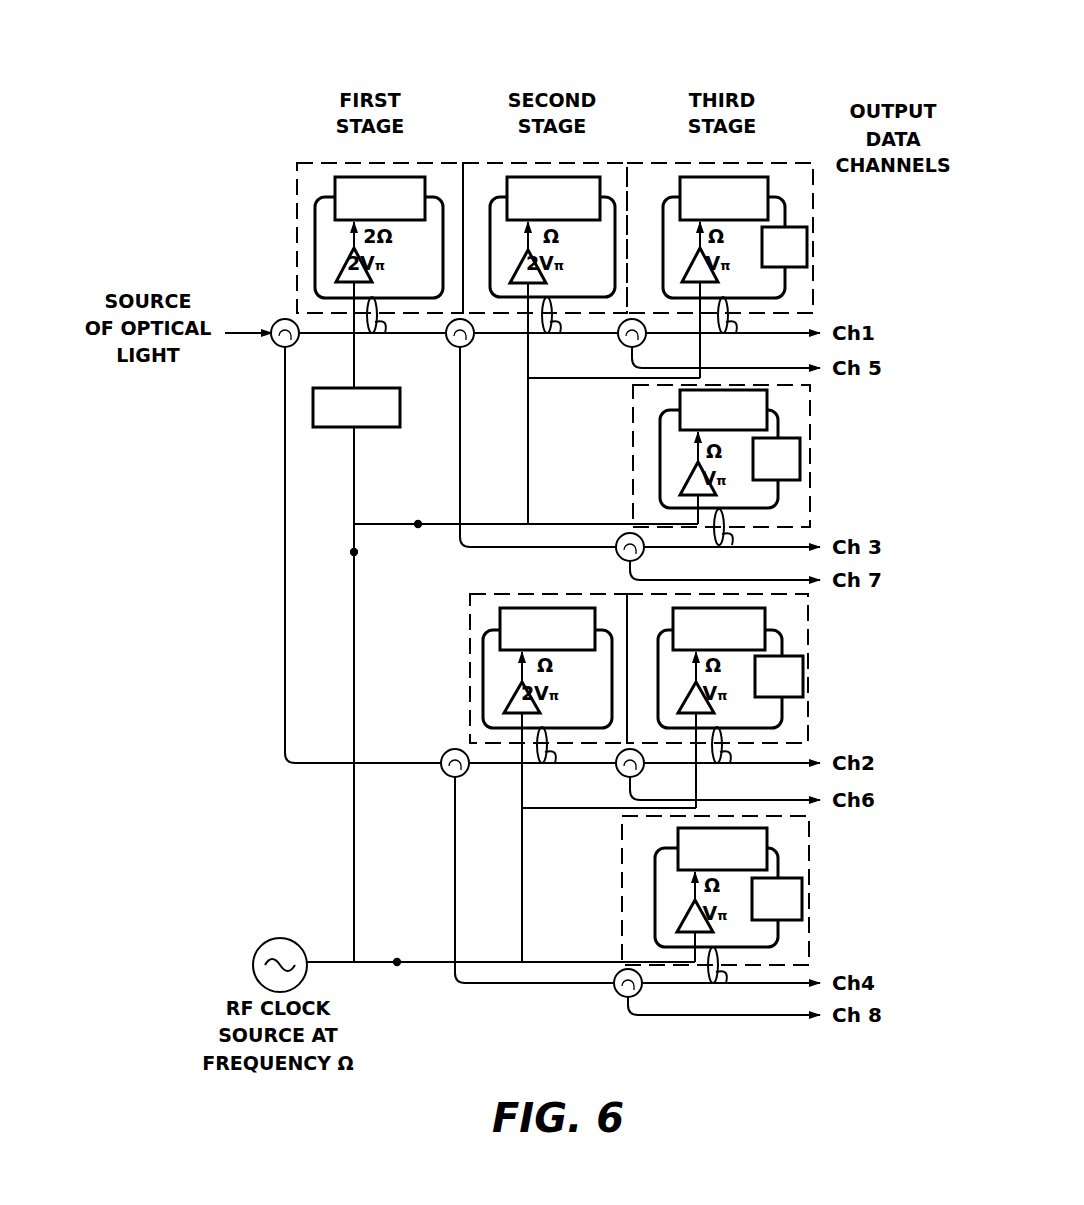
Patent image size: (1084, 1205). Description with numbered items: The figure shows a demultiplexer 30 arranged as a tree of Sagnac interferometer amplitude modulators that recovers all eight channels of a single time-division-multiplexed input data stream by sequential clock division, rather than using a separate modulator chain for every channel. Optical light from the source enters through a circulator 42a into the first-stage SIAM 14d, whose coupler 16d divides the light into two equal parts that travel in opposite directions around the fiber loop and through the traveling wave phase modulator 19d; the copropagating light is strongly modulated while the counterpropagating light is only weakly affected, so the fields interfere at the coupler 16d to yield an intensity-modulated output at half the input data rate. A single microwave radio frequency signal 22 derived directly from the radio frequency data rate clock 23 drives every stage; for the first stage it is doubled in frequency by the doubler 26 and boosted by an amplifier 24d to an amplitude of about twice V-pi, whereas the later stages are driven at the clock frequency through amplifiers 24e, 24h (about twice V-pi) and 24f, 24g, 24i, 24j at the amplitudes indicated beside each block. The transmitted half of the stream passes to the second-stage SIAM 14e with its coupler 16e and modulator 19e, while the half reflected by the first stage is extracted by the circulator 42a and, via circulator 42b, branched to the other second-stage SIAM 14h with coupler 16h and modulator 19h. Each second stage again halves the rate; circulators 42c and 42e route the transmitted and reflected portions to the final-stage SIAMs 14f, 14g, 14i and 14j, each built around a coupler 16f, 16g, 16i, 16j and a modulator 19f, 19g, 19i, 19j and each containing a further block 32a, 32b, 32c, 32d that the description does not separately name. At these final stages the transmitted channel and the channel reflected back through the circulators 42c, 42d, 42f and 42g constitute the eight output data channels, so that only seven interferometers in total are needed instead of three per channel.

The SIAM 14d is at (297, 175).
The SIAM 14e is at (463, 165).
The SIAM 14f is at (642, 165).
The SIAM 14g is at (633, 410).
The SIAM 14h is at (470, 622).
The SIAM 14i is at (804, 640).
The SIAM 14j is at (793, 874).
The modulator 19d is at (408, 178).
The modulator 19e is at (596, 177).
The modulator 19f is at (758, 177).
The modulator 19g is at (768, 410).
The modulator 19h is at (556, 588).
The modulator 19i is at (773, 610).
The modulator 19j is at (773, 830).
The amplifier 24d is at (346, 266).
The amplifier 24e is at (514, 268).
The amplifier 24f is at (685, 266).
The amplifier 24g is at (671, 494).
The amplifier 24h is at (510, 701).
The amplifier 24i is at (680, 696).
The amplifier 24j is at (670, 916).
The coupler 16d is at (384, 331).
The coupler 16e is at (562, 330).
The coupler 16f is at (736, 330).
The coupler 16g is at (724, 541).
The coupler 16h is at (558, 761).
The coupler 16i is at (736, 759).
The coupler 16j is at (720, 981).
The circulator 42a is at (274, 347).
The circulator 42b is at (470, 341).
The circulator 42c is at (648, 342).
The circulator 42d is at (628, 557).
The circulator 42e is at (448, 777).
The circulator 42f is at (625, 777).
The circulator 42g is at (618, 996).
The phase shifter 32a is at (807, 252).
The phase shifter 32b is at (809, 459).
The phase shifter 32c is at (804, 684).
The phase shifter 32d is at (802, 924).
The microwave radio frequency signal 22 is at (352, 553).
The radio frequency data rate clock 23 is at (274, 938).
The doubler 26 is at (400, 410).
The demultiplexer 30 is at (808, 68).